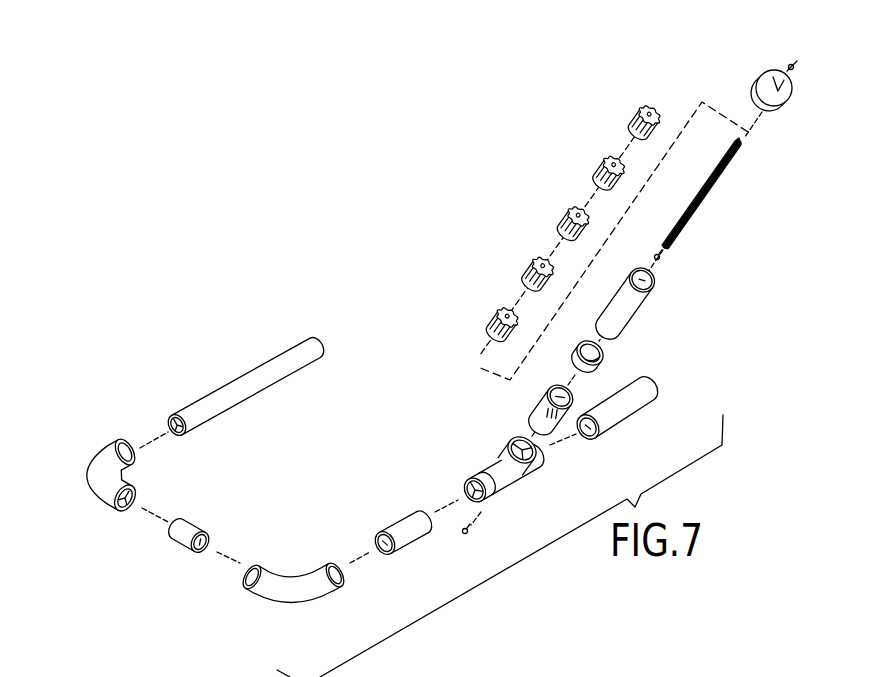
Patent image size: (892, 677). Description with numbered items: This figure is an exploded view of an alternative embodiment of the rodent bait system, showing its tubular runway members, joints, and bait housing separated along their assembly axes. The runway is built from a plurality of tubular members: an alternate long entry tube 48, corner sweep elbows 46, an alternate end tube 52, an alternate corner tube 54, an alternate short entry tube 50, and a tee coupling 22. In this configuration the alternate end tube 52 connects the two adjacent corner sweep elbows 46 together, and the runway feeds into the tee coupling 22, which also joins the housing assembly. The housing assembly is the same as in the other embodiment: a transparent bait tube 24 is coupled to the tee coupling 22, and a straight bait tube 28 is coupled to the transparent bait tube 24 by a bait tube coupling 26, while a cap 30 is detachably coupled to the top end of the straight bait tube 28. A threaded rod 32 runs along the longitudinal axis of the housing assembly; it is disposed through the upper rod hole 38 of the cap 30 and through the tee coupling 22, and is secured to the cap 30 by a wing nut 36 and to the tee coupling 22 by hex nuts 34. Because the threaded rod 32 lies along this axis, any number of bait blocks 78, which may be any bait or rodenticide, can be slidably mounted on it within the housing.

The tee coupling 22 is at (507, 492).
The transparent bait tube 24 is at (532, 407).
The bait tube coupling 26 is at (607, 367).
The straight bait tube 28 is at (636, 309).
The cap 30 is at (776, 108).
The threaded rod 32 is at (706, 193).
The hex nuts 34 is at (661, 262).
The wing nut 36 is at (791, 58).
The upper rod hole 38 is at (765, 77).
The corner sweep elbows 46 is at (98, 470).
The alternate long entry tube 48 is at (303, 362).
The alternate short entry tube 50 is at (654, 393).
The alternate end tube 52 is at (180, 548).
The alternate corner tube 54 is at (397, 522).
The bait blocks 78 is at (631, 117).